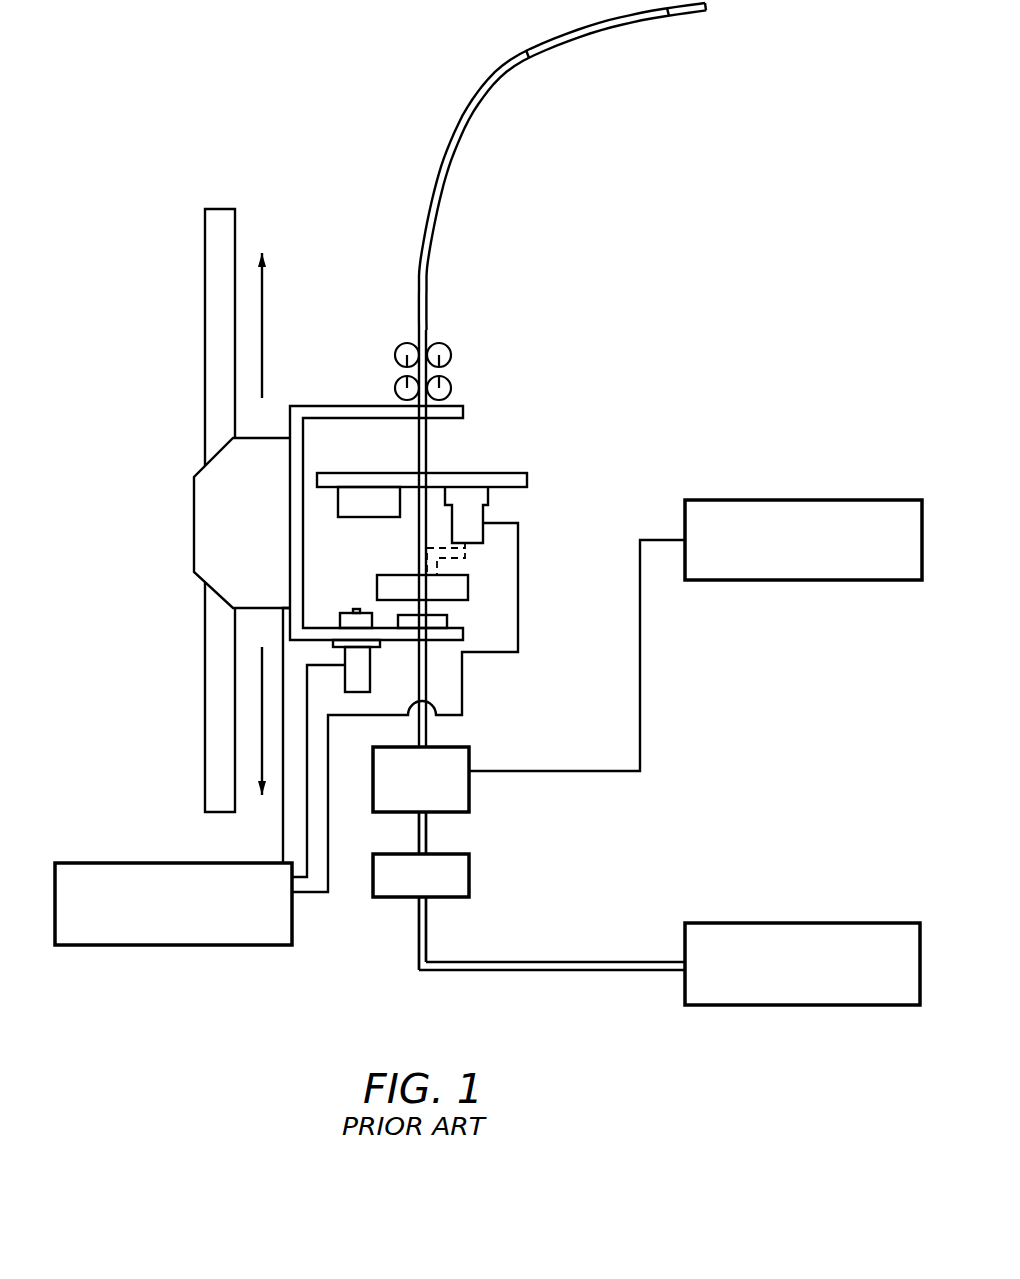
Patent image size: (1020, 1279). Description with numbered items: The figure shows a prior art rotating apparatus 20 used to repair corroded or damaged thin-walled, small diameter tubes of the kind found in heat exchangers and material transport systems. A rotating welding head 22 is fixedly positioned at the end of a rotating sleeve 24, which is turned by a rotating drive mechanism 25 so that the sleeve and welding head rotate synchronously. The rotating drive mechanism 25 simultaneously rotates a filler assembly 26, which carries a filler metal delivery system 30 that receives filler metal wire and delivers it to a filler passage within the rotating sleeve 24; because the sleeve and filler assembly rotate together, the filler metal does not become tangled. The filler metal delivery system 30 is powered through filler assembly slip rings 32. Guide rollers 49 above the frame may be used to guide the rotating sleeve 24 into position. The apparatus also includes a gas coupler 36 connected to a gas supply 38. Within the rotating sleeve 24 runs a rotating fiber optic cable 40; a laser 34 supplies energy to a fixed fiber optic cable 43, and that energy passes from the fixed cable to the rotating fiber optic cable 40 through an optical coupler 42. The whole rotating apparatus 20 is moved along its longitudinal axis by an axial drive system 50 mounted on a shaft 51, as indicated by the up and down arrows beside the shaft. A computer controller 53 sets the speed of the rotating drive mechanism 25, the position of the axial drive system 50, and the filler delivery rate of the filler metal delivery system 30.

The rotating apparatus 20 is at (328, 137).
The rotating welding head 22 is at (687, 15).
The rotating sleeve 24 is at (475, 130).
The rotating drive mechanism 25 is at (370, 670).
The filler assembly 26 is at (480, 447).
The filler metal delivery system 30 is at (485, 518).
The filler assembly slip rings 32 is at (468, 589).
The laser 34 is at (828, 923).
The gas coupler 36 is at (470, 752).
The gas supply 38 is at (832, 500).
The rotating fiber optic cable 40 is at (427, 822).
The optical coupler 42 is at (470, 875).
The fixed fiber optic cable 43 is at (427, 920).
The guide rollers 49 is at (395, 373).
The axial drive system 50 is at (223, 515).
The shaft 51 is at (205, 665).
The computer controller 53 is at (138, 863).